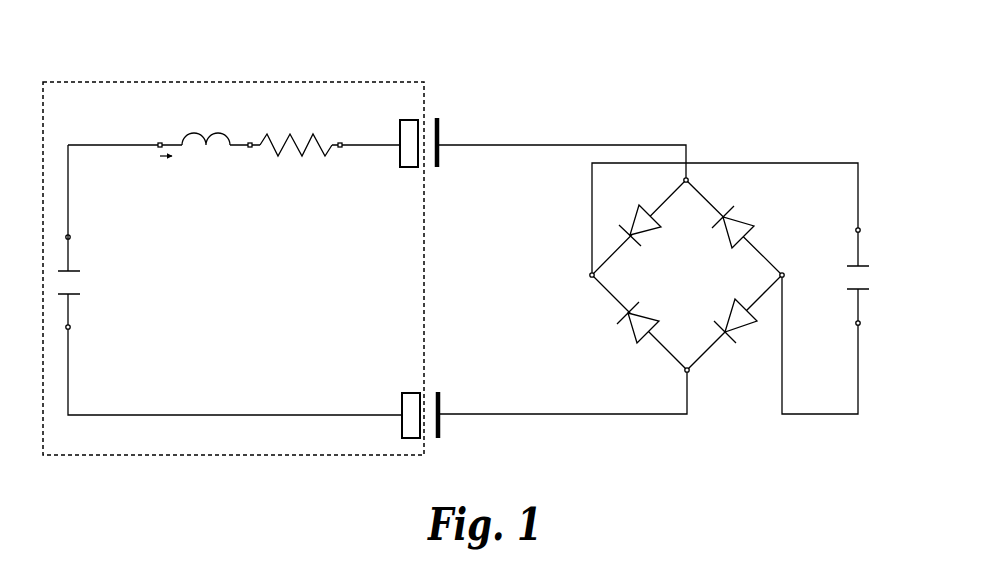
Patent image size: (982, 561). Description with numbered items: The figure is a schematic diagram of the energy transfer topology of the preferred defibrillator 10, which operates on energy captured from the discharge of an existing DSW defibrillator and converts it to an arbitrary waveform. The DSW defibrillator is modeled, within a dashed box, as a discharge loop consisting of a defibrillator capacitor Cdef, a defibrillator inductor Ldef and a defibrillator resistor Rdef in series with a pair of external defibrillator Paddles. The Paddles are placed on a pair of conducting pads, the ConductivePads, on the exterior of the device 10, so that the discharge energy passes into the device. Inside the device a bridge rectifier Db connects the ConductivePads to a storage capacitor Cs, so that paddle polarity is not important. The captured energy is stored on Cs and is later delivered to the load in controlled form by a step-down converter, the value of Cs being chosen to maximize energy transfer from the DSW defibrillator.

The defibrillator 10 is at (476, 227).
The defibrillator capacitor Cdef is at (98, 282).
The defibrillator inductor Ldef is at (206, 121).
The defibrillator resistor Rdef is at (296, 127).
The external defibrillator paddles Paddles is at (398, 382).
The conducting pads ConductivePads is at (450, 175).
The bridge rectifier Db is at (687, 275).
The storage capacitor Cs is at (878, 276).